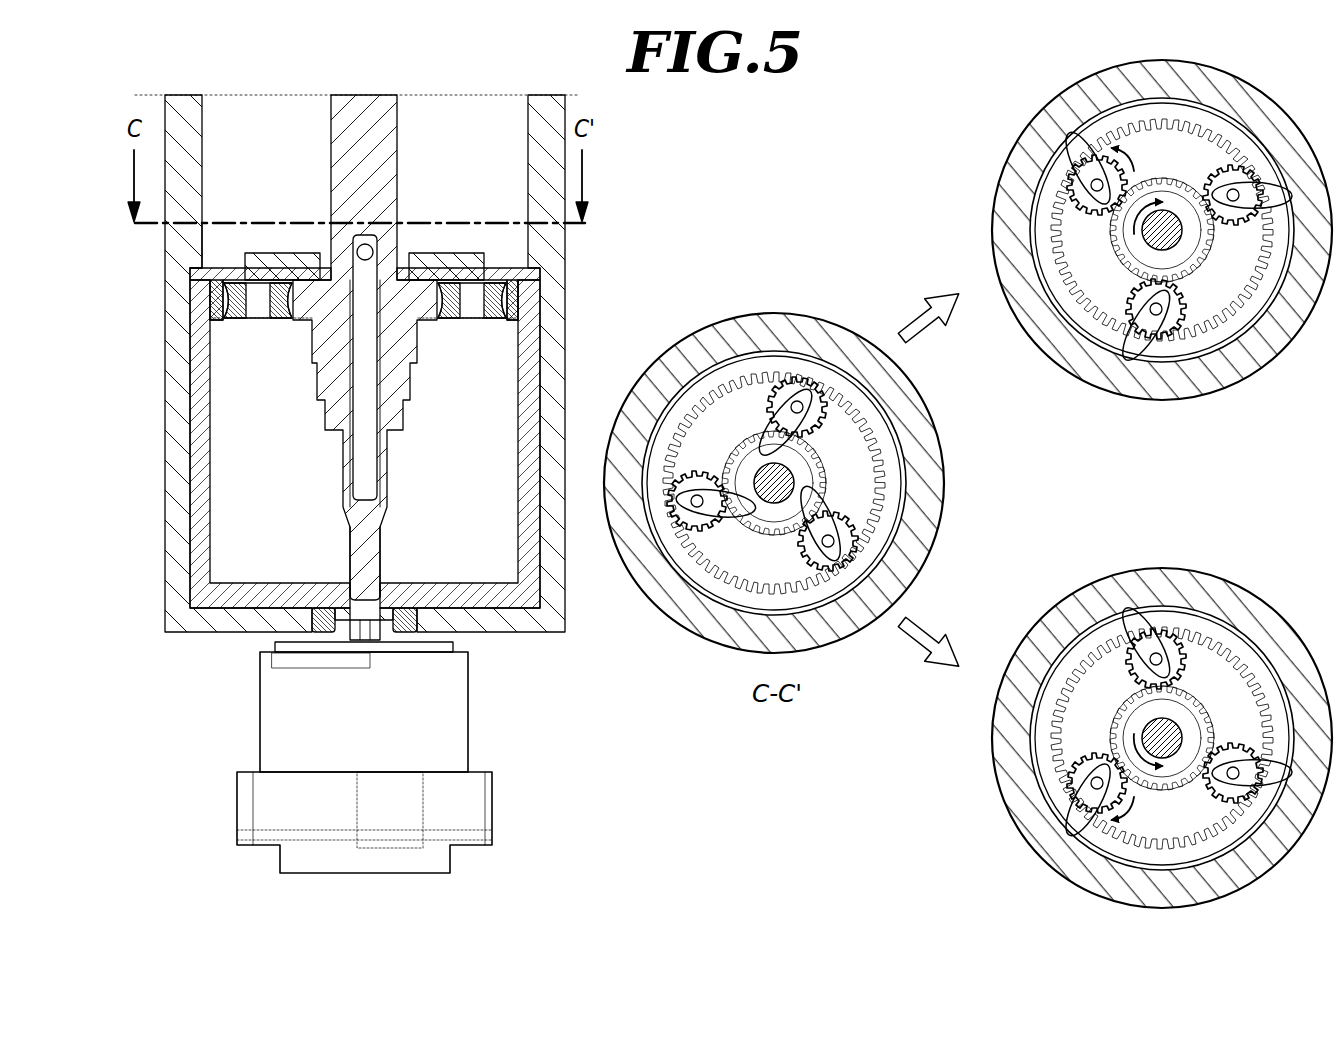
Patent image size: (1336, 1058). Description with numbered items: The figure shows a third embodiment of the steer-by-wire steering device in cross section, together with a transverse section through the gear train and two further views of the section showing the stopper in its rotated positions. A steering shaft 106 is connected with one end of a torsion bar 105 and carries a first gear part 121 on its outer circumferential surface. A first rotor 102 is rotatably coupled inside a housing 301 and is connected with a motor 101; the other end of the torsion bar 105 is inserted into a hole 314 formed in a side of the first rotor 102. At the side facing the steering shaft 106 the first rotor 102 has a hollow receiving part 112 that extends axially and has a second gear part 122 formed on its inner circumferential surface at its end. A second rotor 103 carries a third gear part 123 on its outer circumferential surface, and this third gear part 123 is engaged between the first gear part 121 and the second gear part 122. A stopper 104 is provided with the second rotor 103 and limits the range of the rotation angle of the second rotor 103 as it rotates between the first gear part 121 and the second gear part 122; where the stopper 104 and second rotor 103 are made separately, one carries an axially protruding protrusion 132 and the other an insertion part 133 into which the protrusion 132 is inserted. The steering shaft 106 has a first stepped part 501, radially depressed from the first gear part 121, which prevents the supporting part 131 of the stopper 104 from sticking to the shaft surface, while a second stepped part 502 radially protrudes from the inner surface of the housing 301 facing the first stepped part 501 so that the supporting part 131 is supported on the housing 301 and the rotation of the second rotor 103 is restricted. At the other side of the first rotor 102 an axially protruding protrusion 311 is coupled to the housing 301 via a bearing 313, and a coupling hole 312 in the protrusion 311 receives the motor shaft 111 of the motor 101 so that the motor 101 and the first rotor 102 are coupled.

The motor 101 is at (313, 820).
The first rotor 102 is at (198, 390).
The second rotor 103 is at (230, 290).
The stopper 104 is at (473, 265).
The torsion bar 105 is at (358, 565).
The steering shaft 106 is at (362, 108).
The motor shaft 111 is at (365, 638).
The hollow receiving part 112 is at (270, 444).
The first gear part 121 is at (273, 312).
The second gear part 122 is at (220, 300).
The third gear part 123 is at (750, 507).
The supporting part 131 is at (965, 484).
The protrusion 132 is at (496, 286).
The insertion part 133 is at (478, 308).
The housing 301 is at (178, 108).
The protrusion 311 is at (352, 633).
The coupling hole 312 is at (373, 635).
The bearing 313 is at (340, 625).
The hole 314 is at (403, 633).
The first stepped part 501 is at (322, 274).
The second stepped part 502 is at (198, 257).